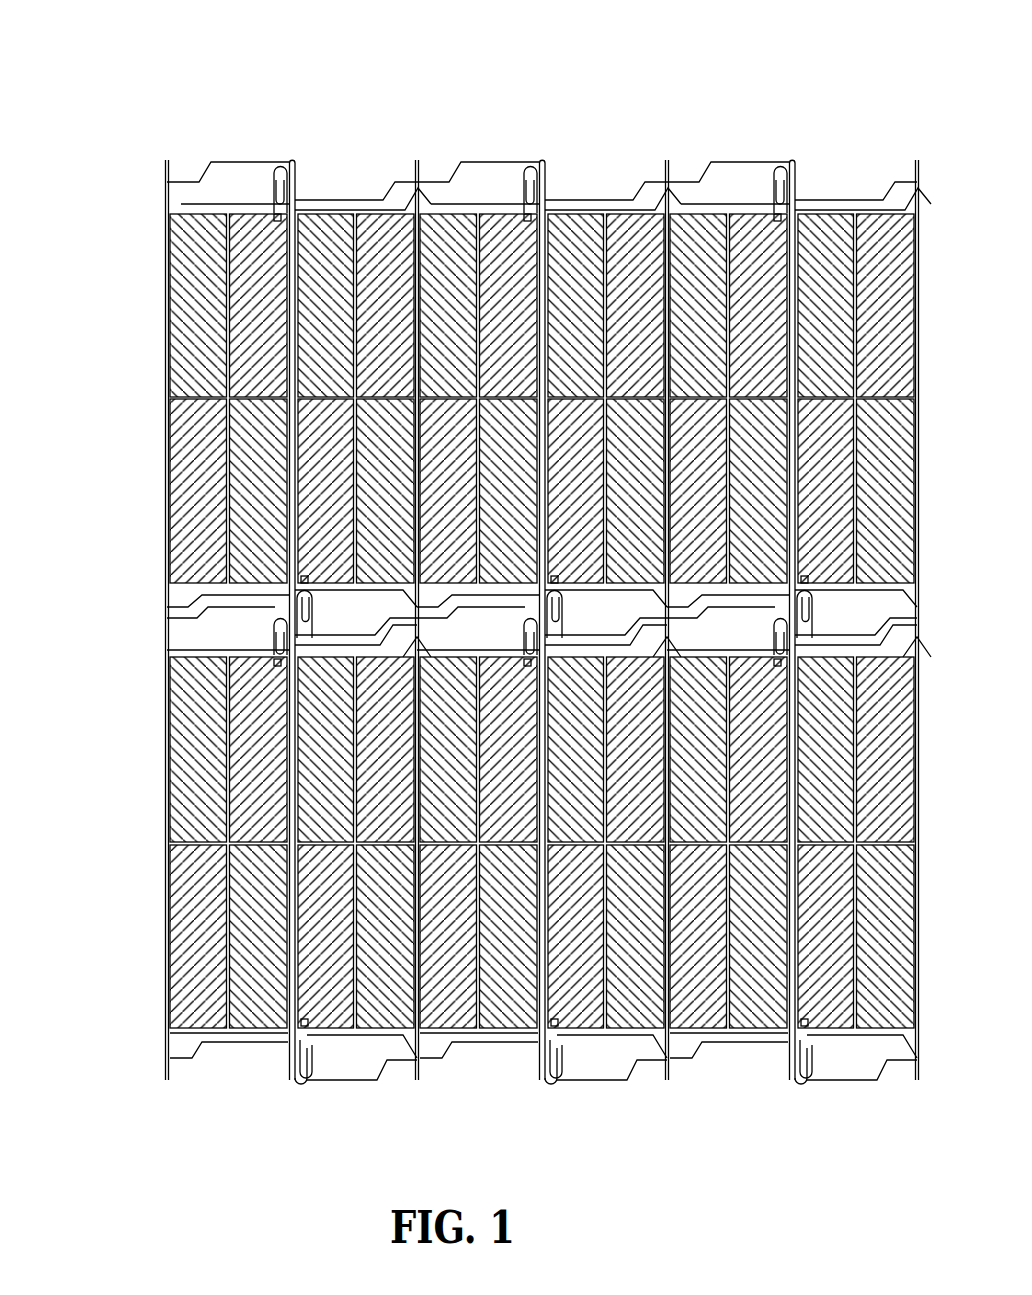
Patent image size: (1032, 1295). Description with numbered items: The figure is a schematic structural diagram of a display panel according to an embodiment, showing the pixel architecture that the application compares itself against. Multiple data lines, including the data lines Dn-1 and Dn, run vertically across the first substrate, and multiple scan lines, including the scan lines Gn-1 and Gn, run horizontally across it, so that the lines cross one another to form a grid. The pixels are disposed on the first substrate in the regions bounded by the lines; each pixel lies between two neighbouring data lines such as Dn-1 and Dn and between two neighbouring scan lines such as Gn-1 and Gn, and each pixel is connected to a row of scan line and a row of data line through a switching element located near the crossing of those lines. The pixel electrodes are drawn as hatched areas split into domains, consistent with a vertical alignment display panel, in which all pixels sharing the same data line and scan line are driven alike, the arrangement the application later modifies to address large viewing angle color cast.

The data line Dn-1 is at (289, 163).
The data line Dn is at (535, 163).
The gate line Gn-1 is at (167, 205).
The gate line Gn is at (167, 613).